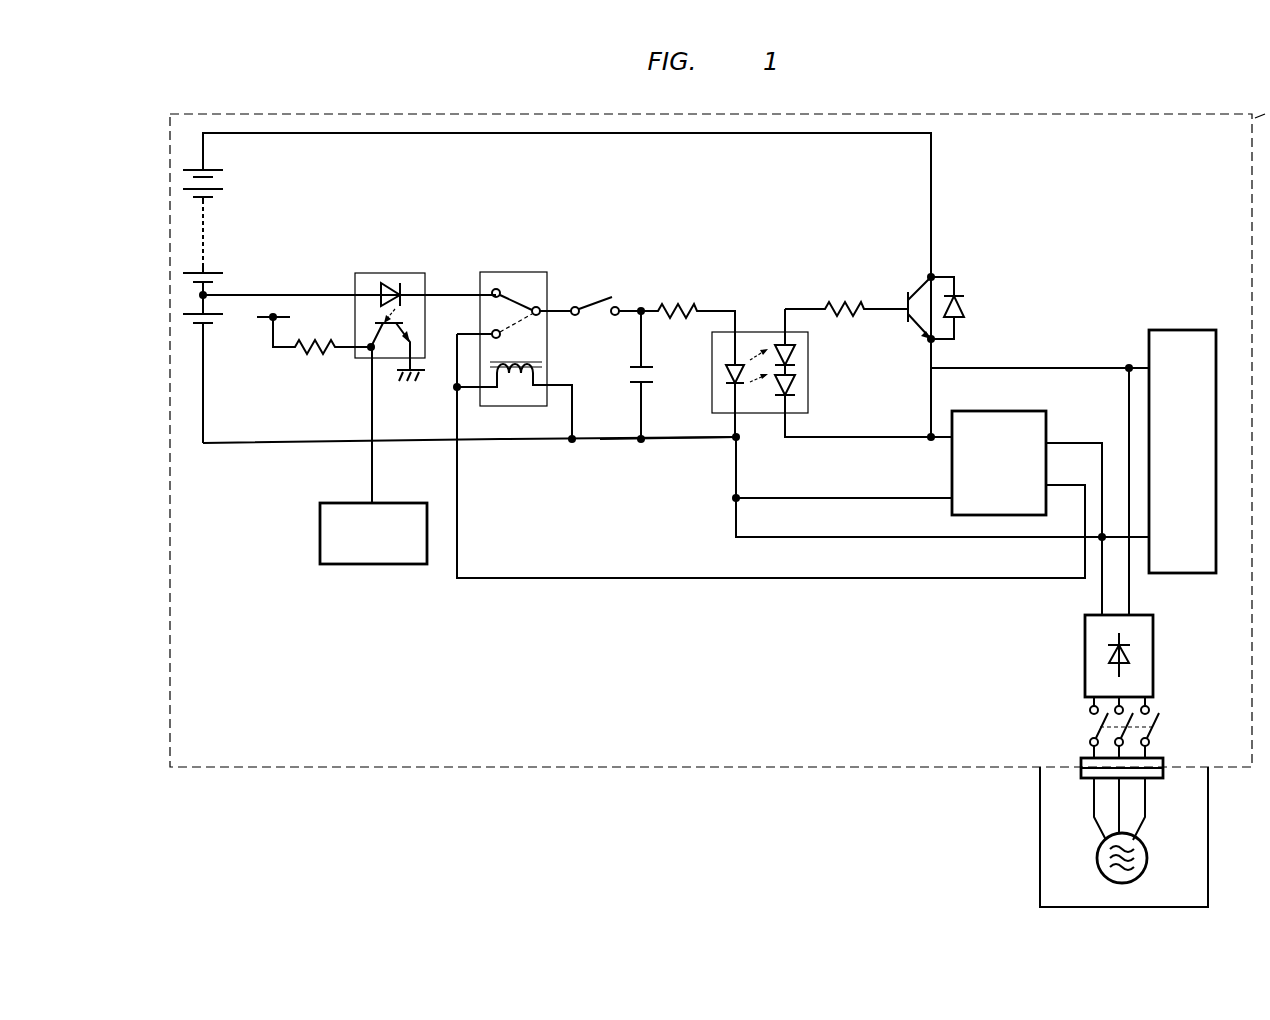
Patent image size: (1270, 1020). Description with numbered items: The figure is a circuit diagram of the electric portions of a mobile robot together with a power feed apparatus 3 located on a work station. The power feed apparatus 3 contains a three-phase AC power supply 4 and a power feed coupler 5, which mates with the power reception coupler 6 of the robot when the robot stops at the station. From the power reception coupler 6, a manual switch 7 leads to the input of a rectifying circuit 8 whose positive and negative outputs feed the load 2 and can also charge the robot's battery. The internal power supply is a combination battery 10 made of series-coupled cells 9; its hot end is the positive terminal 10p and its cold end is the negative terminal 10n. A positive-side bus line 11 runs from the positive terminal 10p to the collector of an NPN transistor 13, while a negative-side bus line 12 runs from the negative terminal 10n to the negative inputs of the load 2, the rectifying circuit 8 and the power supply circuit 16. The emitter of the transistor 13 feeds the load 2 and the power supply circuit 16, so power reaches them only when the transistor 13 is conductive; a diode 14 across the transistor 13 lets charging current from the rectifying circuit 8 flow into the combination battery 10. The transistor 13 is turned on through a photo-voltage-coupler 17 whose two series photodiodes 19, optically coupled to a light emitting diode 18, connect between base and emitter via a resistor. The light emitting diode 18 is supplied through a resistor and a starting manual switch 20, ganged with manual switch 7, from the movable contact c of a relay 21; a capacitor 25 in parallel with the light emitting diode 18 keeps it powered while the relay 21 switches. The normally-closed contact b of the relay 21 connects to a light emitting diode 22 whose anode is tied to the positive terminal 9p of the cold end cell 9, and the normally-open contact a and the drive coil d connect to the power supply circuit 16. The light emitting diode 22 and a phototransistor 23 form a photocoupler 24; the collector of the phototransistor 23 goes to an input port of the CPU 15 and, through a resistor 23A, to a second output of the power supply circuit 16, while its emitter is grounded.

The load 2 is at (1197, 330).
The power feed apparatus 3 is at (1210, 806).
The three-phase AC power supply 4 is at (1148, 858).
The power feed coupler 5 is at (1083, 778).
The power reception coupler 6 is at (1081, 765).
The manual switch 7 is at (1160, 722).
The rectifying circuit 8 is at (1154, 652).
The cell 9 is at (215, 318).
The positive terminal of cold end cell 9p is at (208, 293).
The combination battery 10 is at (236, 199).
The positive terminal 10p is at (210, 168).
The negative terminal 10n is at (209, 326).
The positive-side bus line 11 is at (933, 146).
The negative-side bus line 12 is at (650, 441).
The NPN transistor 13 is at (921, 328).
The diode 14 is at (966, 305).
The CPU 15 is at (407, 503).
The power supply circuit 16 is at (1020, 412).
The photo-voltage-coupler 17 is at (810, 407).
The light emitting diode 18 is at (726, 372).
The photodiodes 19 is at (798, 384).
The manual switch 20 is at (602, 294).
The relay 21 is at (524, 271).
The light emitting diode 22 is at (390, 282).
The phototransistor 23 is at (367, 330).
The resistor 23A is at (315, 355).
The photocoupler 24 is at (427, 278).
The capacitor 25 is at (630, 374).